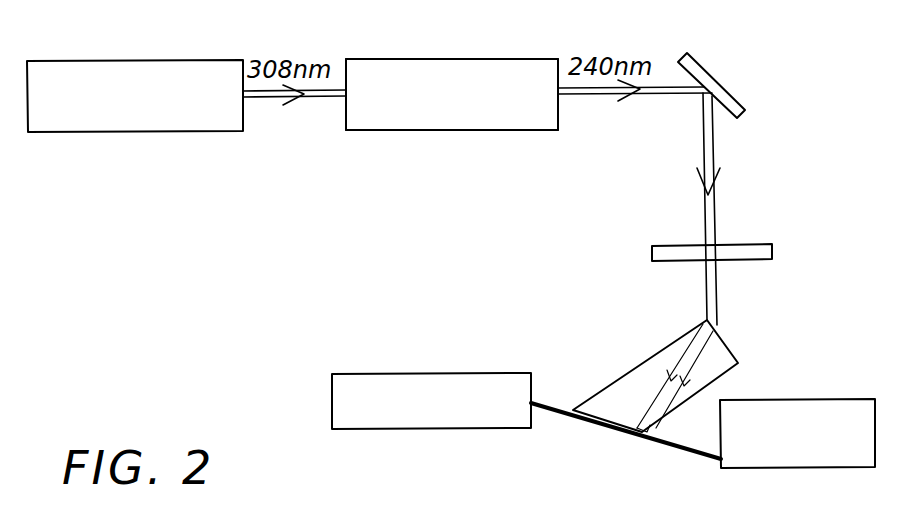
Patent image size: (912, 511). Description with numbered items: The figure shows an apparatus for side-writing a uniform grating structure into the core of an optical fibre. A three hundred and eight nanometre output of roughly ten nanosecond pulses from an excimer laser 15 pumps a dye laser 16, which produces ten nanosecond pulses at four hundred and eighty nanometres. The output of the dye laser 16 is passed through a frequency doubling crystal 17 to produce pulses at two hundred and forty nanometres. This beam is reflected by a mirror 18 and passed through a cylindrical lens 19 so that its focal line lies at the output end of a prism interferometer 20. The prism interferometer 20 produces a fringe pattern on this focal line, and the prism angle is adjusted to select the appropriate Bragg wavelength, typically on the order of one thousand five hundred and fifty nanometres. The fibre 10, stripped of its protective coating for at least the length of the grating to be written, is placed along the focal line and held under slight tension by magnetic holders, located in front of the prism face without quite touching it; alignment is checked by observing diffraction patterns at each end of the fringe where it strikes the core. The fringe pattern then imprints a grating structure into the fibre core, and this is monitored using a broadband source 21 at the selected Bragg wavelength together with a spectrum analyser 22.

The fibre 10 is at (553, 415).
The excimer laser 15 is at (135, 96).
The dye laser 16 is at (416, 111).
The frequency doubling crystal 17 is at (482, 111).
The mirror 18 is at (703, 62).
The cylindrical lens 19 is at (737, 243).
The prism interferometer 20 is at (630, 372).
The broadband source 21 is at (452, 413).
The spectrum analyser 22 is at (824, 442).